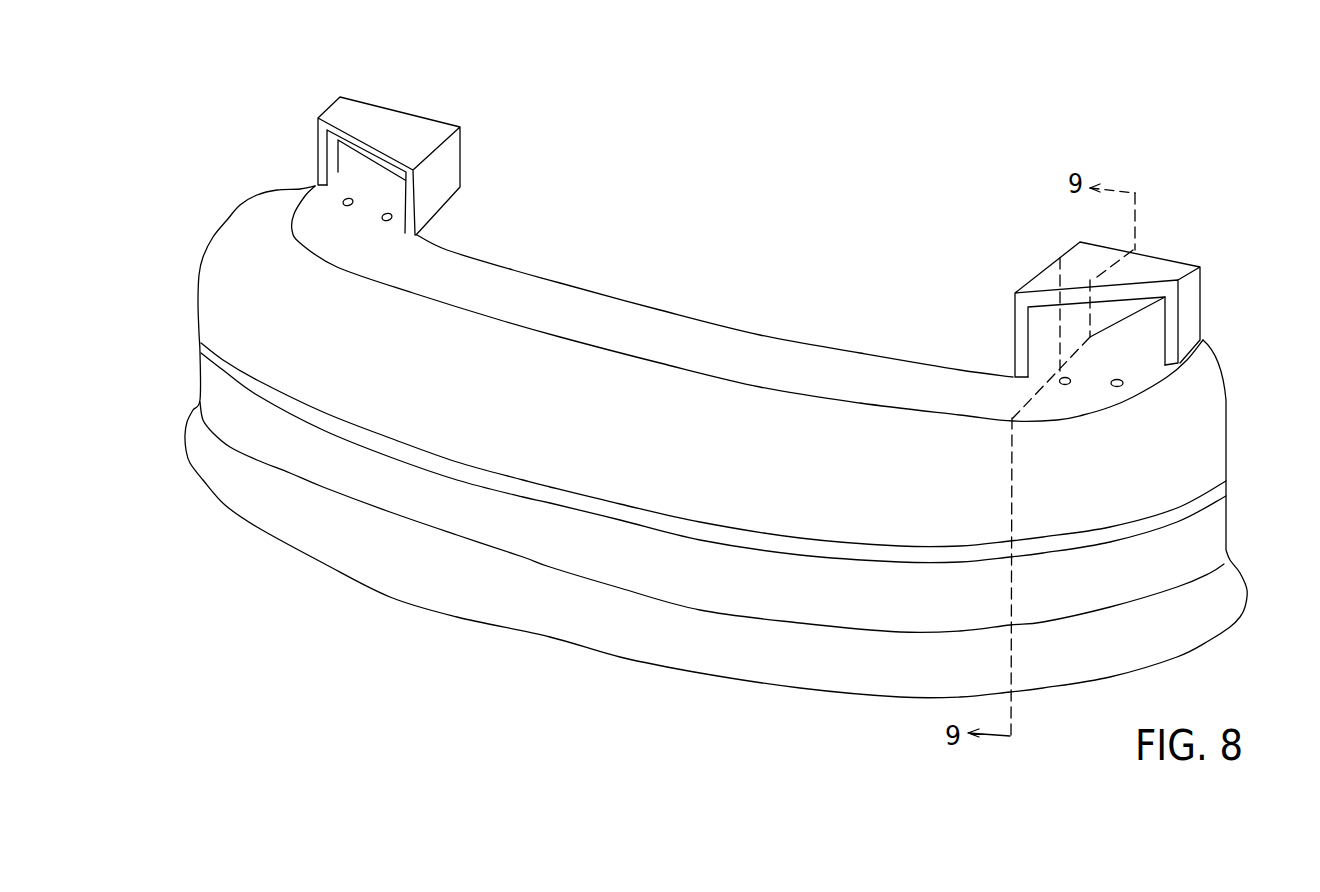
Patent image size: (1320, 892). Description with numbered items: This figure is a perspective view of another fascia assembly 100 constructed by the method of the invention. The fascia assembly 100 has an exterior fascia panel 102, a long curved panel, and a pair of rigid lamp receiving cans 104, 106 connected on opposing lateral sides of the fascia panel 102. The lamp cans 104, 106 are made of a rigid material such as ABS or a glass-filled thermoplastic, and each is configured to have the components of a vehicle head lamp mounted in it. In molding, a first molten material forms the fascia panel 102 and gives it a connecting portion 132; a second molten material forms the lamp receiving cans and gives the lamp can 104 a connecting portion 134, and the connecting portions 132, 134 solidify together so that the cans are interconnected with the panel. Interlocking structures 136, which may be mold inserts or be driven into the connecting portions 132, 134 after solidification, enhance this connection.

The fascia assembly 100 is at (802, 129).
The exterior fascia panel 102 is at (703, 338).
The lamp receiving can 104 is at (410, 123).
The lamp receiving can 106 is at (1157, 267).
The connecting portion 132 is at (317, 218).
The connecting portion 134 is at (344, 188).
The interlocking structures 136 is at (392, 216).